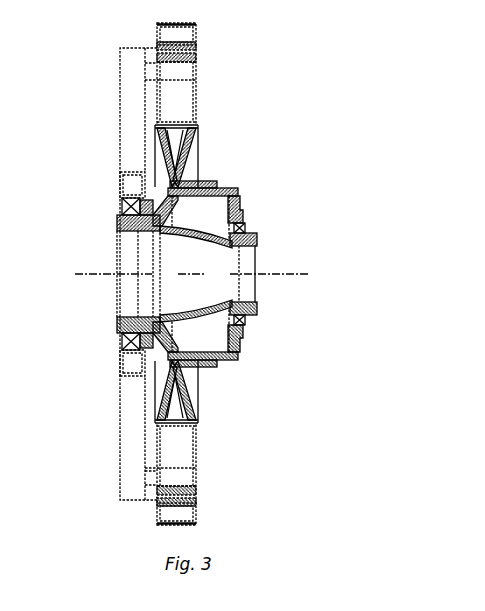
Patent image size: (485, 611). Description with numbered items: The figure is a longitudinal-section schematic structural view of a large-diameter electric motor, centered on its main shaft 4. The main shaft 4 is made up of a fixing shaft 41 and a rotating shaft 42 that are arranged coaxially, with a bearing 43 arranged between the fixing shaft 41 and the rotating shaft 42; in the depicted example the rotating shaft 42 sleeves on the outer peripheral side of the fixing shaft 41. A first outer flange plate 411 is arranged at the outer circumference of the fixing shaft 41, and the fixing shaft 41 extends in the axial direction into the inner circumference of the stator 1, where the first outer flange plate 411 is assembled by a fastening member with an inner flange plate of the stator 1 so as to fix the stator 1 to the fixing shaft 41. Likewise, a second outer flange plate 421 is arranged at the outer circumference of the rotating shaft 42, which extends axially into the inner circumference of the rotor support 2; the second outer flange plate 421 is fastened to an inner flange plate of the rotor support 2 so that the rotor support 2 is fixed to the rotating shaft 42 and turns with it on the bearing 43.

The stator 1 is at (189, 105).
The rotor support 2 is at (130, 145).
The main shaft 4 is at (196, 274).
The fixing shaft 41 is at (237, 192).
The first outer flange plate 411 is at (198, 155).
The rotating shaft 42 is at (116, 222).
The second outer flange plate 421 is at (118, 208).
The bearing 43 is at (124, 344).